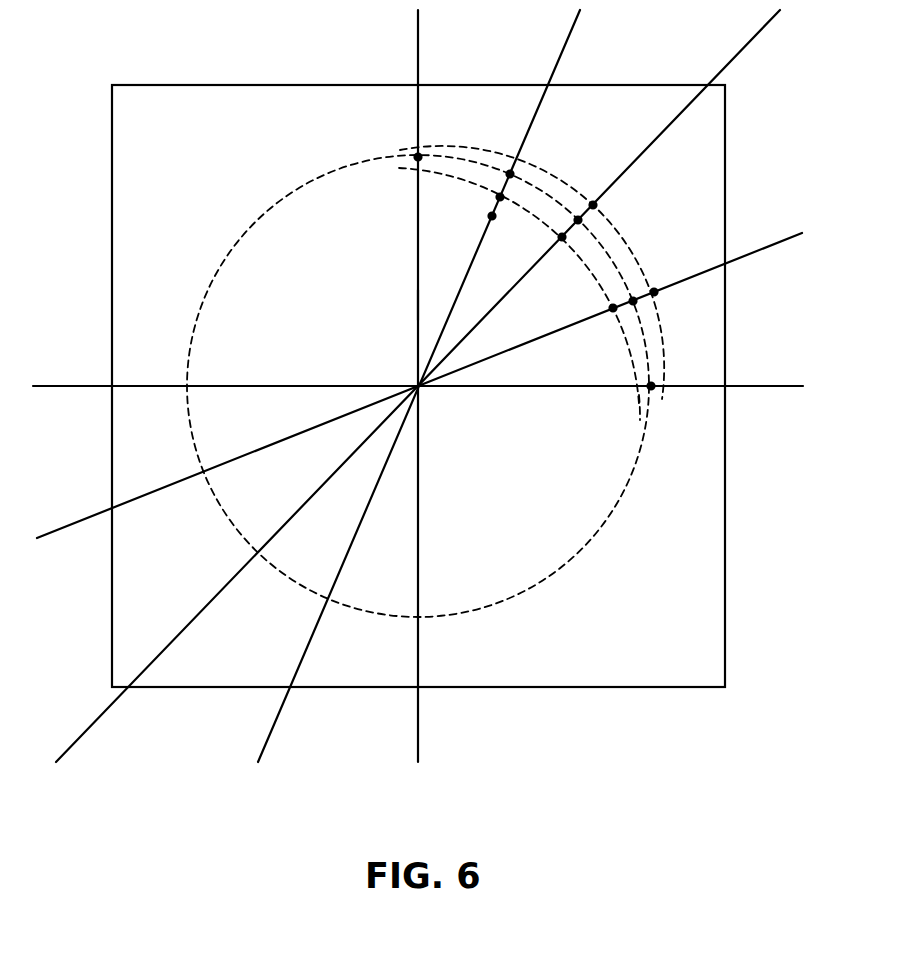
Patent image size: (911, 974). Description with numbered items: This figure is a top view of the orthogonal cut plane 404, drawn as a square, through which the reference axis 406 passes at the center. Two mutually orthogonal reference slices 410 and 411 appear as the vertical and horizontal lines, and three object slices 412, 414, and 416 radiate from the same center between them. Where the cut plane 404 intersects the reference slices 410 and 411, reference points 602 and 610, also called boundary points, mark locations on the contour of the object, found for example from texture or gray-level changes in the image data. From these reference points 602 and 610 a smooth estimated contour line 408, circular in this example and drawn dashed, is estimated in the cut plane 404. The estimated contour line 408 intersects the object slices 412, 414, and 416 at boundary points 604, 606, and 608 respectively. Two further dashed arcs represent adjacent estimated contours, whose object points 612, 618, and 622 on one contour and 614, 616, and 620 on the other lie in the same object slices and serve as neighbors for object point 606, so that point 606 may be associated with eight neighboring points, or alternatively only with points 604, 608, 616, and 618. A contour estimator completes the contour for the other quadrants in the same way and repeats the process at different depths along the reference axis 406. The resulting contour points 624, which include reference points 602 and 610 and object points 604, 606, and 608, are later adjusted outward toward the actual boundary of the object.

The cut plane 404 is at (727, 498).
The reference axis 406 is at (418, 305).
The estimated contour line 408 is at (588, 543).
The reference slice 410 is at (418, 62).
The reference slice 411 is at (742, 387).
The object slice 412 is at (566, 47).
The object slice 414 is at (731, 65).
The object slice 416 is at (762, 250).
The reference point 602 is at (418, 157).
The boundary point 604 is at (510, 174).
The boundary point 606 is at (594, 206).
The boundary point 608 is at (633, 301).
The reference point 610 is at (647, 387).
The object point 612 is at (500, 197).
The object point 614 is at (492, 216).
The object point 616 is at (562, 238).
The object point 618 is at (592, 205).
The object point 620 is at (613, 308).
The object point 622 is at (654, 292).
The contour points 624 is at (636, 436).